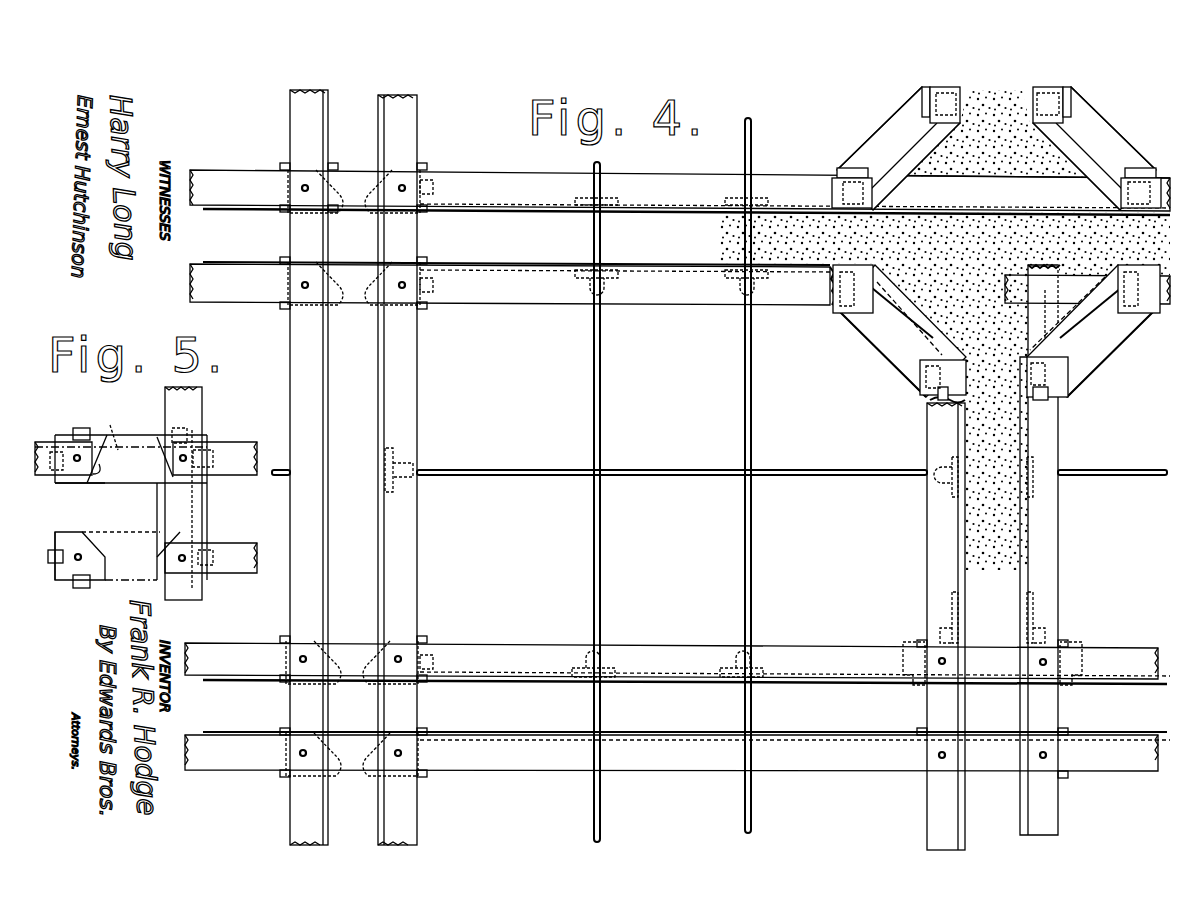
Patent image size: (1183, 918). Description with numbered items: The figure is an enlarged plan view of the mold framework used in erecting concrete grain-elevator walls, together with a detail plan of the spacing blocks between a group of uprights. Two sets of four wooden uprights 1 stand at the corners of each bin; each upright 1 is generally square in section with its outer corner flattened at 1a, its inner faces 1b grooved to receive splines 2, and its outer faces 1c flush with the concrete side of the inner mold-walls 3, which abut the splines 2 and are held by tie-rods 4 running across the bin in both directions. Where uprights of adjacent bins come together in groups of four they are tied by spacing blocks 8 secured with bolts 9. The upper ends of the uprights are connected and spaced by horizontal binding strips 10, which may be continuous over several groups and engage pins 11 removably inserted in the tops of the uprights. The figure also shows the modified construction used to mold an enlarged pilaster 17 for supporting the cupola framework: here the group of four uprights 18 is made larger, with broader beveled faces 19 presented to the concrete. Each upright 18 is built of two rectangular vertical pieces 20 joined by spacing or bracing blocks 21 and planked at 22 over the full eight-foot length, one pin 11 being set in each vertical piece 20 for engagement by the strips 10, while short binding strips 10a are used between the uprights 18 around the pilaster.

In FIG. 4, the upright 1 is at (283, 168).
In FIG. 5, the upright 1 is at (62, 440).
In FIG. 5, the flattened outer corner 1a is at (97, 482).
In FIG. 5, the inner faces 1b is at (56, 533).
In FIG. 5, the outer faces 1c is at (70, 484).
In FIG. 4, the splines 2 is at (826, 292).
In FIG. 5, the splines 2 is at (80, 428).
In FIG. 4, the inner mold-walls 3 is at (612, 213).
In FIG. 4, the tie-rods 4 is at (601, 388).
In FIG. 5, the spacing blocks 8 is at (121, 507).
In FIG. 5, the bolts 9 is at (218, 496).
In FIG. 4, the horizontal strips 10 is at (668, 186).
In FIG. 5, the horizontal strips 10 is at (228, 450).
In FIG. 4, the binding strips 10a is at (1010, 252).
In FIG. 4, the pins 11 is at (301, 188).
In FIG. 5, the pins 11 is at (186, 455).
In FIG. 4, the enlarged pilaster 17 is at (945, 330).
In FIG. 4, the uprights 18 is at (996, 242).
In FIG. 4, the beveled faces 19 is at (923, 160).
In FIG. 4, the vertical pieces 20 is at (921, 103).
In FIG. 4, the spacing or bracing blocks 21 is at (862, 151).
In FIG. 4, the planking 22 is at (908, 158).